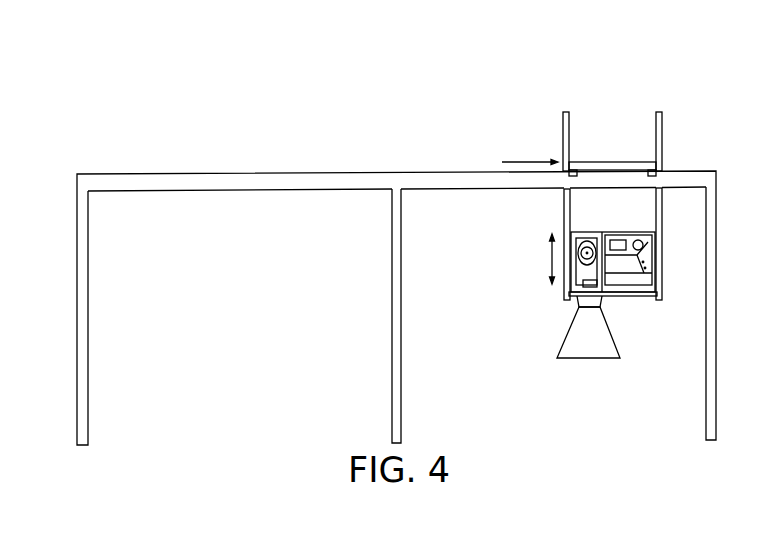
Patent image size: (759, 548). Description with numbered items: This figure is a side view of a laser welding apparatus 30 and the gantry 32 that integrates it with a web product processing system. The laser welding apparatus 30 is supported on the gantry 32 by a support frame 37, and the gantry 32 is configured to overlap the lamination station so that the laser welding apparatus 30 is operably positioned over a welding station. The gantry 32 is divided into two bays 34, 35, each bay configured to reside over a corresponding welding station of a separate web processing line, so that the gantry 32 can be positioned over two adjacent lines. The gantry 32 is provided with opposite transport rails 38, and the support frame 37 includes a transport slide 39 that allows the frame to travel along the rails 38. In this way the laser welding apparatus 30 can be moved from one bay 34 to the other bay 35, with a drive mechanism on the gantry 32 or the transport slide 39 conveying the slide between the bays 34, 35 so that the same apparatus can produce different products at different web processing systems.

The laser welding apparatus 30 is at (627, 295).
The gantry 32 is at (396, 141).
The bay 34 is at (491, 288).
The bay 35 is at (175, 288).
The support frame 37 is at (613, 174).
The transport rails 38 is at (397, 213).
The transport slide 39 is at (612, 137).